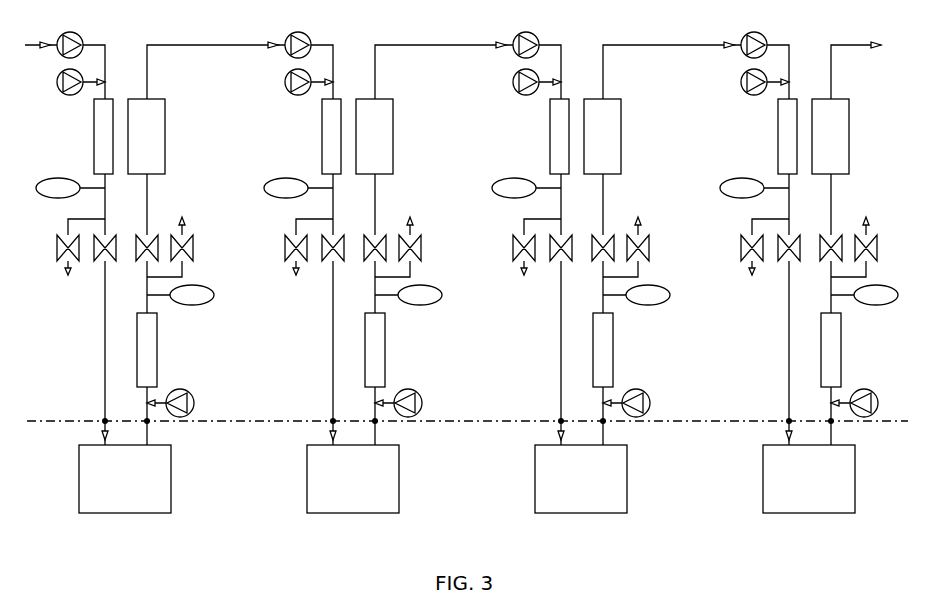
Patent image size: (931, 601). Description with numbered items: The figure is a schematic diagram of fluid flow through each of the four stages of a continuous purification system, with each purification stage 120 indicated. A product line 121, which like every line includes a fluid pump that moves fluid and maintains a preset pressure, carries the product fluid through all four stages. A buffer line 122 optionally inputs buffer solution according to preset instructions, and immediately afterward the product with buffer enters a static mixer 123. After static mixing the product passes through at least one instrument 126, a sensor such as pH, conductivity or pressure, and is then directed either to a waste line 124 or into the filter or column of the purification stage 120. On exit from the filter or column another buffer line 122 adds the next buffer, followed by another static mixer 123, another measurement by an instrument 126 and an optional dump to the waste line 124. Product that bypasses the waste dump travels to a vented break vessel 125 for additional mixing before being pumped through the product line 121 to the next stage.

The purification stage 120 is at (821, 490).
The product line 121 is at (445, 64).
The buffer line 122 is at (743, 89).
The static mixer 123 is at (778, 126).
The waste line 124 is at (468, 250).
The vented break vessel 125 is at (843, 147).
The instrument 126 is at (740, 178).